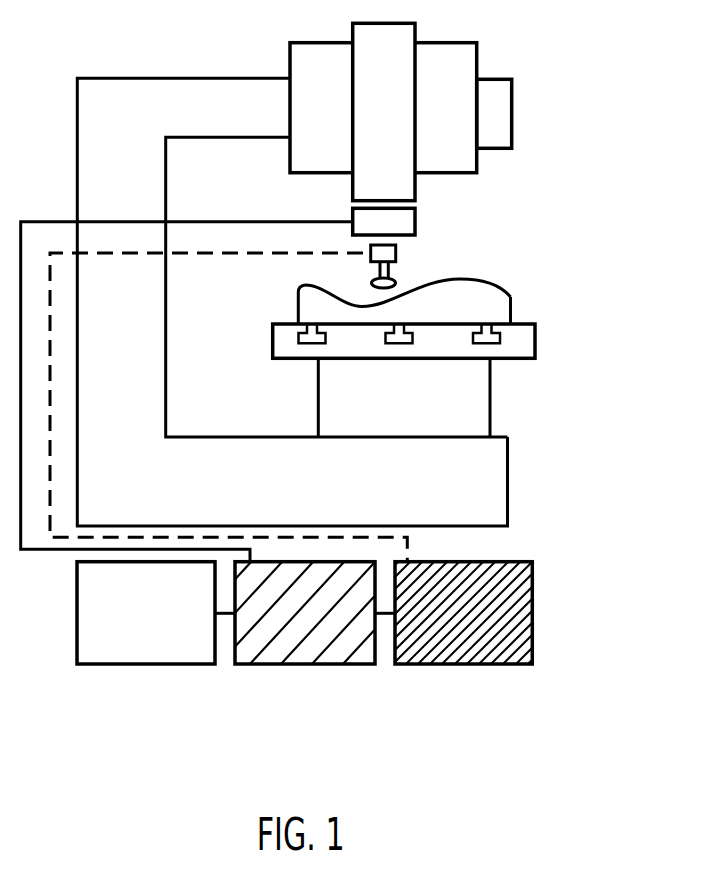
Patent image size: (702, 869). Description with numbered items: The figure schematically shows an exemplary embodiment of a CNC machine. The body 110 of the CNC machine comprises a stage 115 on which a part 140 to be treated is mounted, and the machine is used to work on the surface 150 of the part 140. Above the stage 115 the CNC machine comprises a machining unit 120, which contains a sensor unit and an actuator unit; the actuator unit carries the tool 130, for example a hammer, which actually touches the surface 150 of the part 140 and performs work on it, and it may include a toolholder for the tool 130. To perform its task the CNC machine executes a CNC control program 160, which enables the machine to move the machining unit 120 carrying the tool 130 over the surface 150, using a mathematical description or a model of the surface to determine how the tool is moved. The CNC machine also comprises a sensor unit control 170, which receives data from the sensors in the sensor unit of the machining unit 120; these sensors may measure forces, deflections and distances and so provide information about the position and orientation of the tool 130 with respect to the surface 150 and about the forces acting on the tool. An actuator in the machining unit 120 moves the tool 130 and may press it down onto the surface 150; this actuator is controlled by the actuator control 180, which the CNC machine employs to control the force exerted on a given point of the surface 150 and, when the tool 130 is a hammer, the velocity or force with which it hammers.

The body 110 is at (77, 110).
The stage 115 is at (535, 341).
The machining unit 120 is at (431, 216).
The tool 130 is at (417, 249).
The part 140 is at (541, 292).
The surface 150 is at (513, 270).
The CNC control program 160 is at (190, 664).
The sensor unit control 170 is at (350, 664).
The actuator control 180 is at (510, 664).